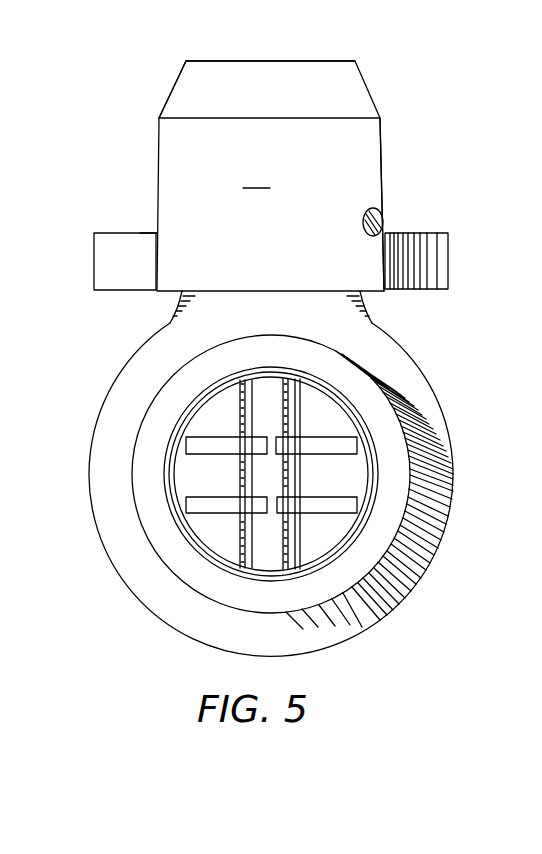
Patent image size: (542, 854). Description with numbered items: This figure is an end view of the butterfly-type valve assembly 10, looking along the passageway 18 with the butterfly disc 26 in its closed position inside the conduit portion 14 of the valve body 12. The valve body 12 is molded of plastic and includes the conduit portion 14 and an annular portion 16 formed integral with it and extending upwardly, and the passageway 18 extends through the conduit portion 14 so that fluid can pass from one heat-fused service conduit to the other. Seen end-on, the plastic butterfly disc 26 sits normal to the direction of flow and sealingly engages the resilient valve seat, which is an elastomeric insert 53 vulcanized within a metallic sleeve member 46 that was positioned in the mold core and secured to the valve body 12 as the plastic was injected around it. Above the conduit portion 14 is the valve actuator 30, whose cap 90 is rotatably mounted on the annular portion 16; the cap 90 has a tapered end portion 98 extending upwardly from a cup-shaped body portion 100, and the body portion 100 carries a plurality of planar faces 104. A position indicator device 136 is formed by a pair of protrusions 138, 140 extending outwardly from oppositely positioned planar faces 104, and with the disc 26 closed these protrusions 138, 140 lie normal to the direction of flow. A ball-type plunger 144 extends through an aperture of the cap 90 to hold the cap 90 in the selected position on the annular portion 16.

The valve assembly 10 is at (471, 236).
The valve body 12 is at (279, 489).
The conduit portion 14 is at (152, 517).
The annular portion 16 is at (356, 296).
The passageway 18 is at (195, 395).
The butterfly disc 26 is at (192, 472).
The valve actuator 30 is at (371, 81).
The metallic sleeve member 46 is at (337, 559).
The elastomeric insert 53 is at (352, 530).
The cap 90 is at (250, 61).
The tapered end portion 98 is at (176, 86).
The cup-shaped body portion 100 is at (383, 130).
The planar faces 104 is at (259, 177).
The position indicator device 136 is at (126, 208).
The protrusion 138 is at (106, 263).
The protrusion 140 is at (440, 277).
The ball-type plunger 144 is at (377, 215).